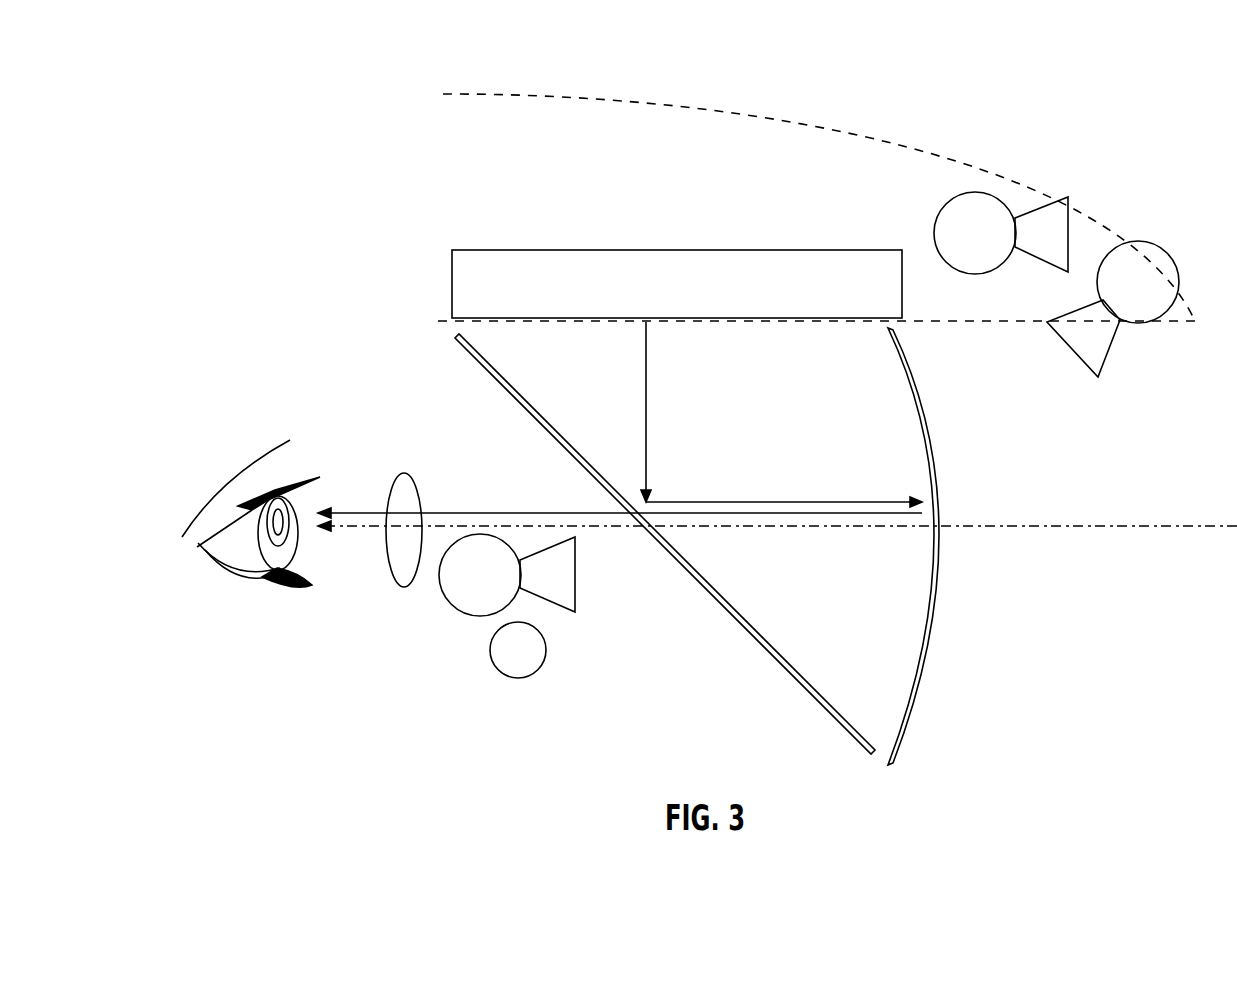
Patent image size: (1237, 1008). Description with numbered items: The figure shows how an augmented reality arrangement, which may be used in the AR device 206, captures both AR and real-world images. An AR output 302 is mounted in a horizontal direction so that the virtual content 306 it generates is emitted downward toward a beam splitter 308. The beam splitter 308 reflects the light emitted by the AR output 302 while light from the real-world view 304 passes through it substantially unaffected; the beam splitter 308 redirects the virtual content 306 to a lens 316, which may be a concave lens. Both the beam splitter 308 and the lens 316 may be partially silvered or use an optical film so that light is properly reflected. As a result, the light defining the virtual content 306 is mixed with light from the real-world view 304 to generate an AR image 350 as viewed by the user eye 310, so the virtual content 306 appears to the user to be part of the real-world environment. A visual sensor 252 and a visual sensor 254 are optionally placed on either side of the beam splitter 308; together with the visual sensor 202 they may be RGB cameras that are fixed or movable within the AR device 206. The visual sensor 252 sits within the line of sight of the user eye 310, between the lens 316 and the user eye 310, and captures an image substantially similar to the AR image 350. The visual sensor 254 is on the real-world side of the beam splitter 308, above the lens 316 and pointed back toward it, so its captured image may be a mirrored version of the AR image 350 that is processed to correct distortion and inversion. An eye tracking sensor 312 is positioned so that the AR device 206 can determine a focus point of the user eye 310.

The AR device 206 is at (495, 95).
The AR output 302 is at (676, 250).
The visual sensor 202 is at (976, 192).
The visual sensor 254 is at (1113, 340).
The beam splitter 308 is at (453, 337).
The virtual content 306 is at (648, 418).
The real-world view 304 is at (1165, 525).
The AR image 350 is at (401, 471).
The user eye 310 is at (240, 552).
The visual sensor 252 is at (476, 617).
The eye tracking sensor 312 is at (547, 652).
The lens 316 is at (912, 657).